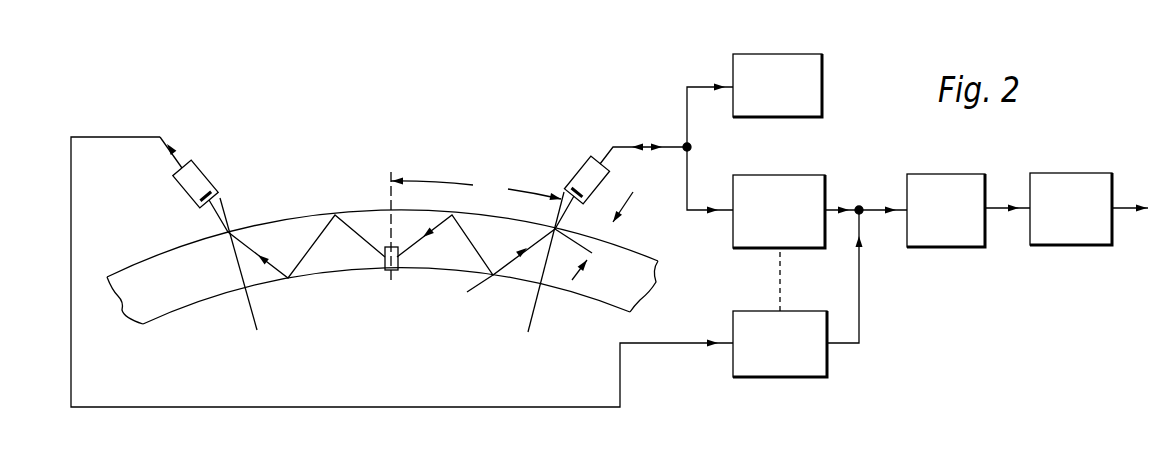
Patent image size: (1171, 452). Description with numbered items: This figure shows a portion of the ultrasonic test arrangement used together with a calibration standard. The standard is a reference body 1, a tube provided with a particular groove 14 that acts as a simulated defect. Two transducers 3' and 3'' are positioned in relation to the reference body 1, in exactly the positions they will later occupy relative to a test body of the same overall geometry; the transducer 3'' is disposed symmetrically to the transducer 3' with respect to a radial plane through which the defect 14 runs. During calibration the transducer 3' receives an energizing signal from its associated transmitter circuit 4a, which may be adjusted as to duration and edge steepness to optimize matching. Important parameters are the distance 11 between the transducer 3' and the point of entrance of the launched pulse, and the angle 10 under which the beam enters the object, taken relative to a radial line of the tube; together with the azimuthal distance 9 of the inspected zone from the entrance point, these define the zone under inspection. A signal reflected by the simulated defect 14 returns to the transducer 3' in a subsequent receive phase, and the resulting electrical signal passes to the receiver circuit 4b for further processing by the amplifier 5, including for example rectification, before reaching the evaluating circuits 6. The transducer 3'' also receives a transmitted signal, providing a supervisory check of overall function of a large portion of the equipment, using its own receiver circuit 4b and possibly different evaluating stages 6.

The reference body 1 is at (180, 297).
The transducer 3' is at (577, 154).
The transducer 3'' is at (215, 156).
The transmitter circuit 4a is at (777, 85).
The receiver circuit 4b is at (780, 276).
The amplifier 5 is at (946, 210).
The evaluating circuit 6 is at (1071, 209).
The azimuthal distance 9 is at (476, 226).
The angle 10 is at (527, 322).
The distance 11 is at (596, 235).
The groove 14 is at (384, 272).